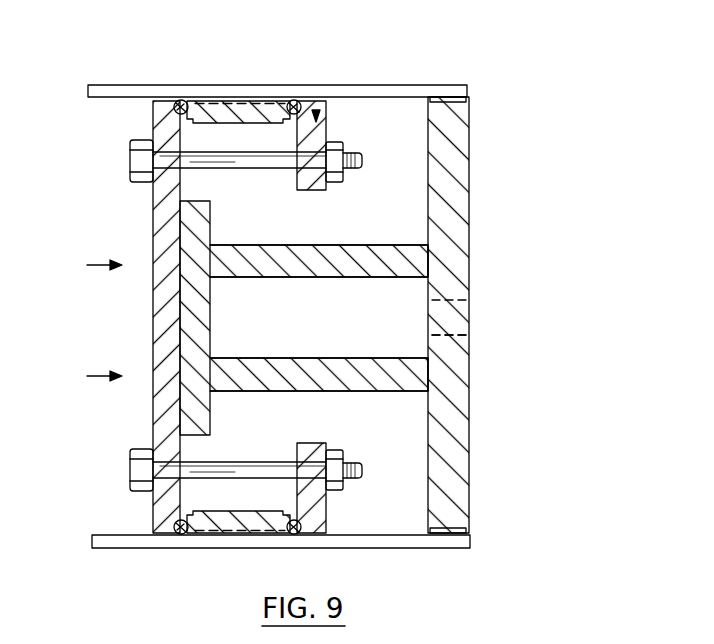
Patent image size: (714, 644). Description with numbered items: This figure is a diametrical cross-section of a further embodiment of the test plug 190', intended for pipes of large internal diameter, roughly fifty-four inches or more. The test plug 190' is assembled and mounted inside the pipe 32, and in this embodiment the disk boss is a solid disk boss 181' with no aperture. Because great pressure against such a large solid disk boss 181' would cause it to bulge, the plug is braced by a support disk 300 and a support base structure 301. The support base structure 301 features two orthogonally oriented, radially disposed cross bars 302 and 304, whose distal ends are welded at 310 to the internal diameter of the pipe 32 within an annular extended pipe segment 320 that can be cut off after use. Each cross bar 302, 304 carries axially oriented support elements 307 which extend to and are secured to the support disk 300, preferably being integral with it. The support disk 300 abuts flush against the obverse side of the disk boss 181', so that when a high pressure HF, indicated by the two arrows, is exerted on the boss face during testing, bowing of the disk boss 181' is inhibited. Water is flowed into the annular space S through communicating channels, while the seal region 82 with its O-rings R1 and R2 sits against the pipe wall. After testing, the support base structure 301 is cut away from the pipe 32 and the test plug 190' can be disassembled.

The annular extended pipe segment 320 is at (470, 91).
The pipe 32 is at (112, 547).
The solid disk boss 181' is at (121, 317).
The support disk 300 is at (196, 326).
The axially oriented support elements 307 is at (410, 262).
The cross bar 304 is at (455, 175).
The support base structure 301 is at (464, 318).
The cross bar 302 is at (472, 337).
The weld 310 is at (447, 97).
The seal housing 82 is at (278, 110).
The annular space S is at (246, 99).
The O-ring seal R2 is at (181, 100).
The O-ring seal R1 is at (296, 100).
The test plug 190' is at (361, 65).
The high pressure (high force) HF is at (84, 320).